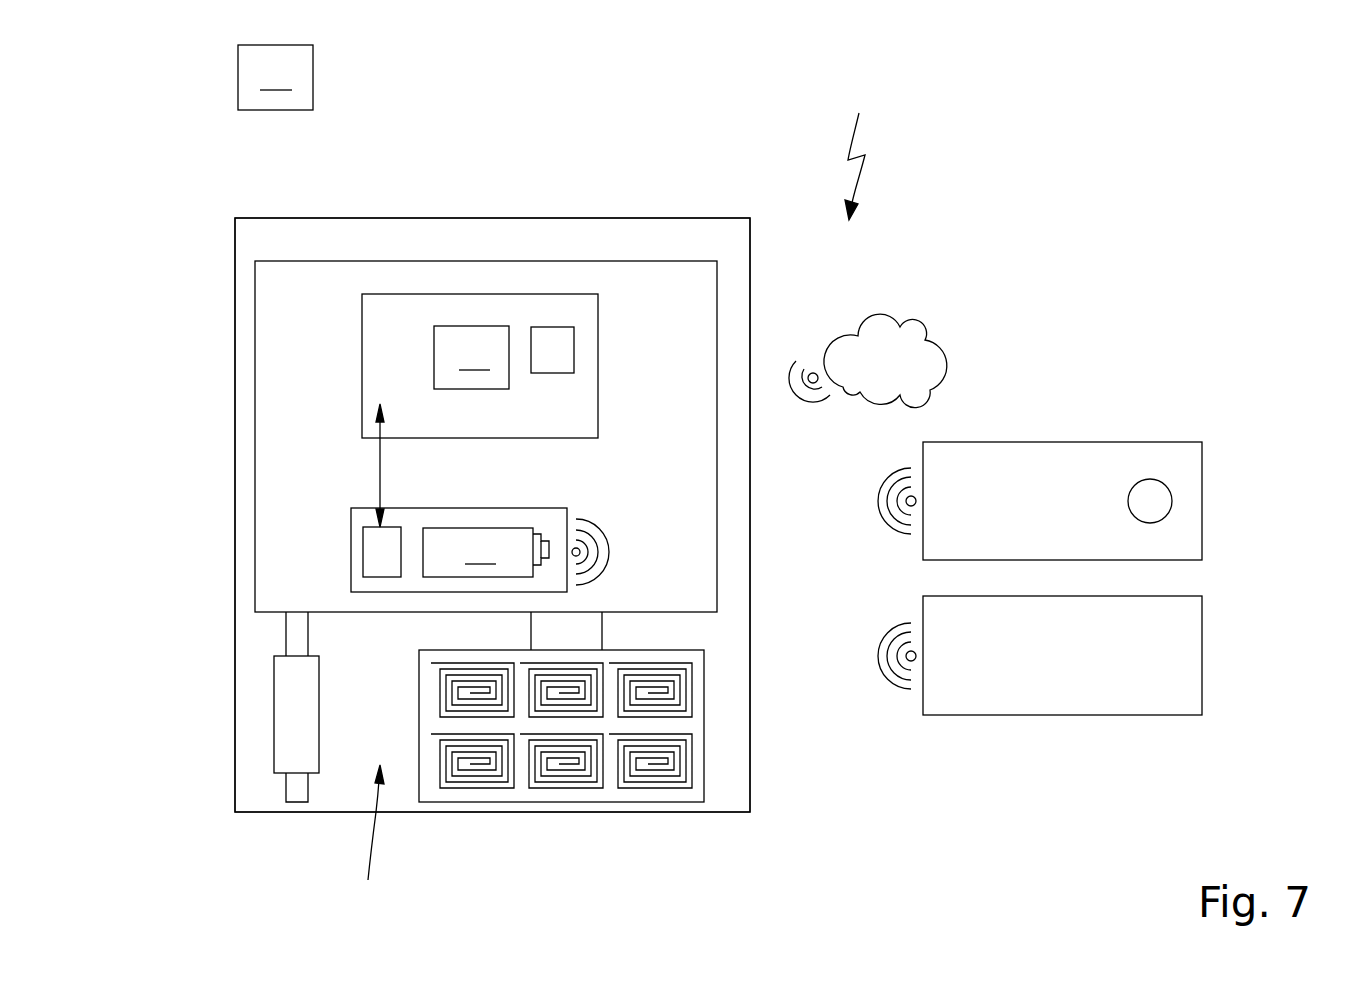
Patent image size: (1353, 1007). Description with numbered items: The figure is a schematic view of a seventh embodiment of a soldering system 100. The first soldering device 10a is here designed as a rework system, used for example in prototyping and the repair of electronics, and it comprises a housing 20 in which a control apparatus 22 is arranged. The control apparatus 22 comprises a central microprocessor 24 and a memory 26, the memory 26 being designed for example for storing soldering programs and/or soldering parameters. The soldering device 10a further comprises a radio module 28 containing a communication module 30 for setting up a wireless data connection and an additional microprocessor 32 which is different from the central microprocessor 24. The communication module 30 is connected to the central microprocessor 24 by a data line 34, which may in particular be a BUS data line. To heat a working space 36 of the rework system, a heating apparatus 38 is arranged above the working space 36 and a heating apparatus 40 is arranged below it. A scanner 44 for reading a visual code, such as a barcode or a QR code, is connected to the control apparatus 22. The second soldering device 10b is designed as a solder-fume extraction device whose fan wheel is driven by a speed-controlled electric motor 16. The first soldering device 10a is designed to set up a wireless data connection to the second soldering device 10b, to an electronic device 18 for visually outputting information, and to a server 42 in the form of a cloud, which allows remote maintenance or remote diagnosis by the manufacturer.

The first soldering device 10a is at (652, 218).
The second soldering device 10b is at (1202, 467).
The speed-controlled electric motor 16 is at (1155, 503).
The electronic device 18 is at (1202, 657).
The housing 20 is at (695, 812).
The control apparatus 22 is at (467, 261).
The central microprocessor 24 is at (471, 357).
The memory 26 is at (558, 342).
The radio module 28 is at (462, 508).
The communication module 30 is at (478, 552).
The additional microprocessor 32 is at (382, 552).
The data line 34 is at (380, 458).
The working space 36 is at (365, 842).
The heating apparatus 38 is at (282, 759).
The heating apparatus 40 is at (539, 793).
The server 42 is at (932, 355).
The scanner 44 is at (275, 77).
The soldering system 100 is at (852, 149).